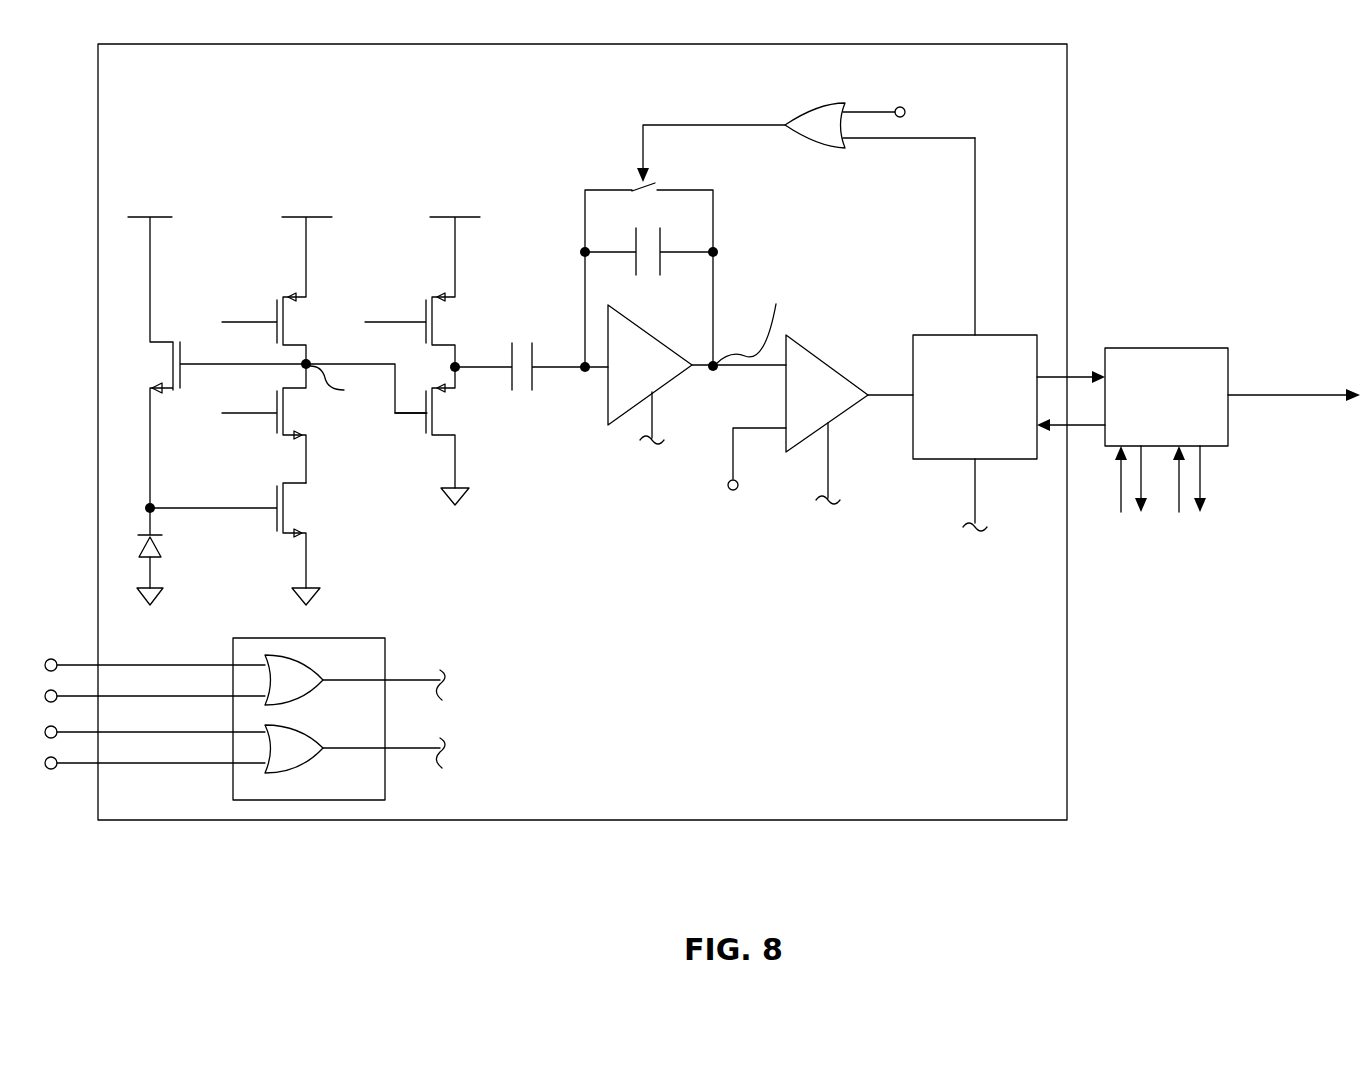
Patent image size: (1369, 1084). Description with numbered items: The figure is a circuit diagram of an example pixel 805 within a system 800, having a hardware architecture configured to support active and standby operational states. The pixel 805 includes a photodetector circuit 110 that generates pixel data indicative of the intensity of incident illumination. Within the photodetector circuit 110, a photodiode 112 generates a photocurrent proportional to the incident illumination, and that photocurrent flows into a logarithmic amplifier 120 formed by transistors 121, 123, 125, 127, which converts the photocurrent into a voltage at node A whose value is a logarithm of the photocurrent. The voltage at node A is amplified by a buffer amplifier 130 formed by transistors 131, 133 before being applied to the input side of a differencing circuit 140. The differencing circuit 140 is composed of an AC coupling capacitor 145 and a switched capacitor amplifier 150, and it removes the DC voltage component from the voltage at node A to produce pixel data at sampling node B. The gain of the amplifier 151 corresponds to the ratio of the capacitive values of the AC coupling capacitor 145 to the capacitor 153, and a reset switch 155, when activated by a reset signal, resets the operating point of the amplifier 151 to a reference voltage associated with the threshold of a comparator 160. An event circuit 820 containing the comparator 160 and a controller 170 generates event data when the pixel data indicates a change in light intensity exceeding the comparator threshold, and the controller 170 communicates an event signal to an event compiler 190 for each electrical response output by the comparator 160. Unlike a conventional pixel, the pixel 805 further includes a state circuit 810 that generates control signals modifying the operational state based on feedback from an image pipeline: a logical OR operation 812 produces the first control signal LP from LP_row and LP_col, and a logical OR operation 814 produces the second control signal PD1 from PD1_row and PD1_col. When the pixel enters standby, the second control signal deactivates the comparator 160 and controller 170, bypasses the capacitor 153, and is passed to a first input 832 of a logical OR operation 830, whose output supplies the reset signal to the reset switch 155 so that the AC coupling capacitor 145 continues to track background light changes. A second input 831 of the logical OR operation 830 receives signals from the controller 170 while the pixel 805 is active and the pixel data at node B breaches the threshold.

The event camera system 800 is at (1214, 84).
The pixel 805 is at (556, 432).
The photodetector circuit 110 is at (500, 100).
The logarithmic amplifier 120 is at (236, 252).
The transistor 121 is at (217, 362).
The transistor 123 is at (267, 290).
The transistor 125 is at (263, 423).
The transistor 127 is at (236, 544).
The photodiode 112 is at (160, 545).
The buffer amplifier 130 is at (483, 271).
The transistor 131 is at (415, 292).
The transistor 133 is at (433, 436).
The differencing circuit 140 is at (706, 100).
The AC coupling capacitor 145 is at (533, 392).
The switched capacitor amplifier 150 is at (620, 512).
The amplifier 151 is at (685, 390).
The capacitor 153 is at (659, 277).
The reset switch 155 is at (636, 182).
The comparator 160 is at (812, 435).
The controller 170 is at (975, 352).
The event compiler 190 is at (1198, 430).
The state circuit 810 is at (245, 719).
The logical OR operation 812 is at (355, 680).
The logical OR operation 814 is at (355, 749).
The event circuit 820 is at (799, 627).
The logical OR operation 830 is at (880, 128).
The second input 831 is at (886, 140).
The first input 832 is at (864, 111).